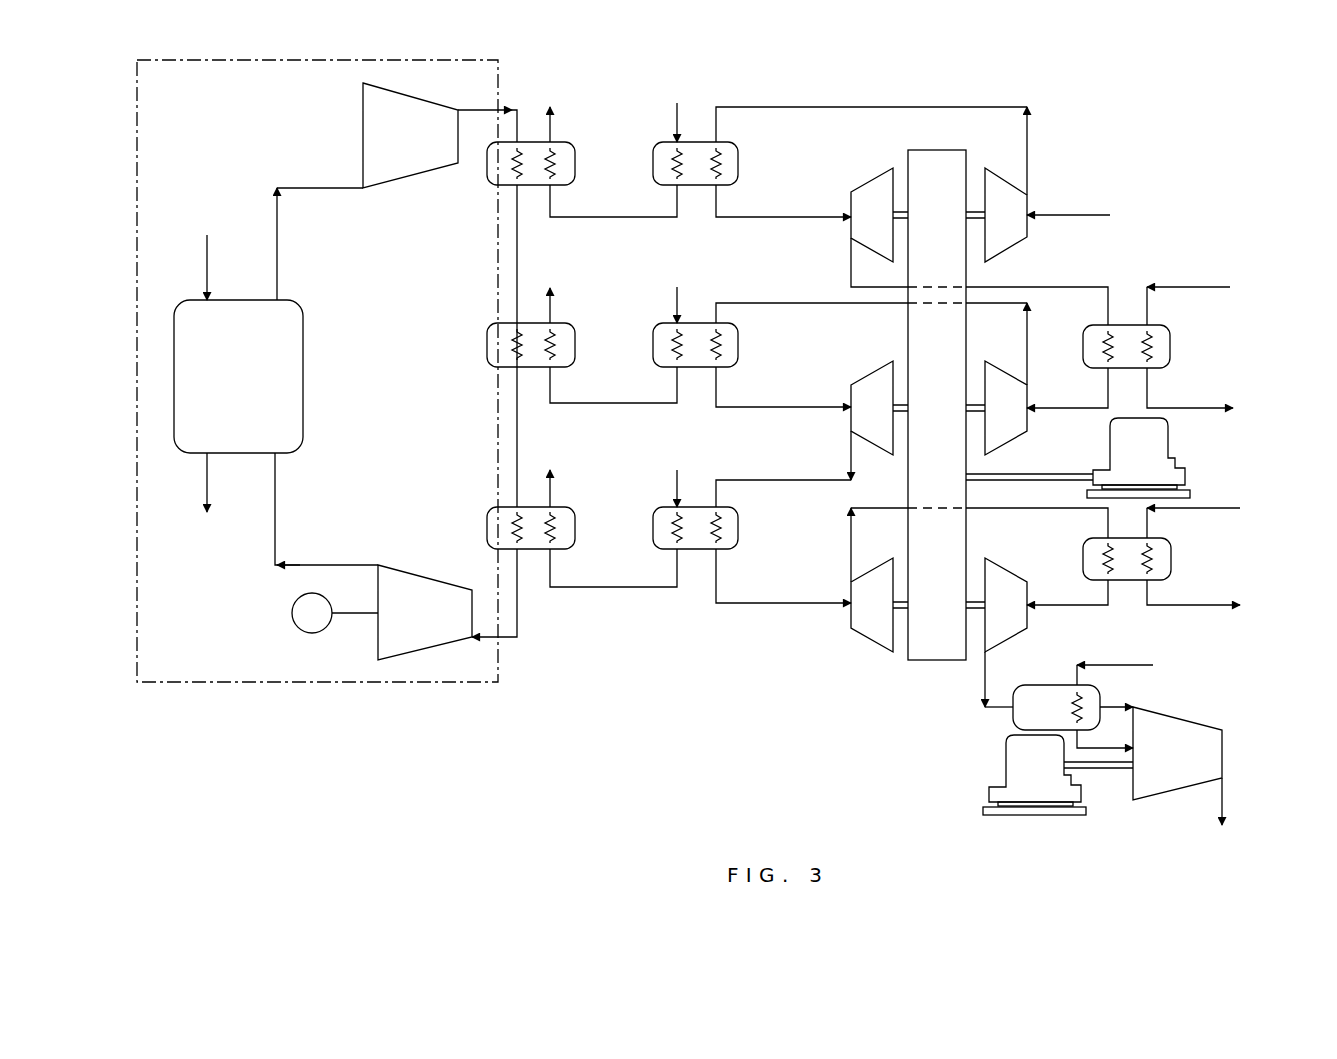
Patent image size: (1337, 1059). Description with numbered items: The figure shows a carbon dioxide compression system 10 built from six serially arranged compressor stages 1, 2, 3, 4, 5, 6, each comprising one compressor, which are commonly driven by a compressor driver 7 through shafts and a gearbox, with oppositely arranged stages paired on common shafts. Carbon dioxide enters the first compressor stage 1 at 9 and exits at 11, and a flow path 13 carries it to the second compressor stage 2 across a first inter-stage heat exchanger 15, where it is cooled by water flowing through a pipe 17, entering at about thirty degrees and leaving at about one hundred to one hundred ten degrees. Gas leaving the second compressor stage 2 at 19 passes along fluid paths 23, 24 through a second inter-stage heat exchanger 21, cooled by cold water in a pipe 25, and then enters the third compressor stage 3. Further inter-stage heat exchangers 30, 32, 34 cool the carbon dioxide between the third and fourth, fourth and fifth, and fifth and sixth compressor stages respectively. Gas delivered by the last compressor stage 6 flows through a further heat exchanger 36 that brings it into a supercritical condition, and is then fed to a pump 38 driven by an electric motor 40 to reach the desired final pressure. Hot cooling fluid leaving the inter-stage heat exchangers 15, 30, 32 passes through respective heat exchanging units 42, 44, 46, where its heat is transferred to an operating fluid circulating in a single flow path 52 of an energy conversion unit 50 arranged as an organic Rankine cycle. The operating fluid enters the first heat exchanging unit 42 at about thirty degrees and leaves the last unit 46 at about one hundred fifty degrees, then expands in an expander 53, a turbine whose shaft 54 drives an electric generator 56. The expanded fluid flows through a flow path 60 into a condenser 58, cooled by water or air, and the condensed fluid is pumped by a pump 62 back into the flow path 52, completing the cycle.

The first compressor stage 1 is at (1015, 202).
The second compressor stage 2 is at (876, 182).
The third compressor stage 3 is at (1003, 378).
The fourth compressor stage 4 is at (872, 378).
The fifth compressor stage 5 is at (872, 578).
The sixth compressor stage 6 is at (1003, 578).
The compressor driver 7 is at (1110, 448).
The carbon dioxide inlet 9 is at (1093, 213).
The carbon dioxide compression system 10 is at (1152, 95).
The first compressor stage exit 11 is at (1020, 138).
The flow path 13 is at (842, 110).
The first inter-stage heat exchanger 15 is at (738, 163).
The pipe 17 is at (677, 205).
The second compressor stage exit 19 is at (851, 282).
The second inter-stage heat exchanger 21 is at (1172, 345).
The fluid path 23 is at (1057, 290).
The fluid path 24 is at (1108, 386).
The pipe 25 is at (1140, 305).
The inter-stage heat exchanger 30 is at (738, 344).
The inter-stage heat exchanger 32 is at (738, 528).
The inter-stage heat exchanger 34 is at (1172, 558).
The further heat exchanger 36 is at (1038, 688).
The pump 38 is at (1200, 728).
The electric motor 40 is at (1012, 758).
The heat exchanging unit 42 is at (565, 180).
The heat exchanging unit 44 is at (590, 328).
The heat exchanging unit 46 is at (590, 505).
The energy conversion unit 50 is at (257, 685).
The flow path 52 is at (498, 228).
The expander 53 is at (432, 578).
The shaft 54 is at (355, 610).
The electric generator 56 is at (300, 630).
The condenser 58 is at (292, 364).
The flow path 60 is at (275, 252).
The pump 62 is at (372, 140).